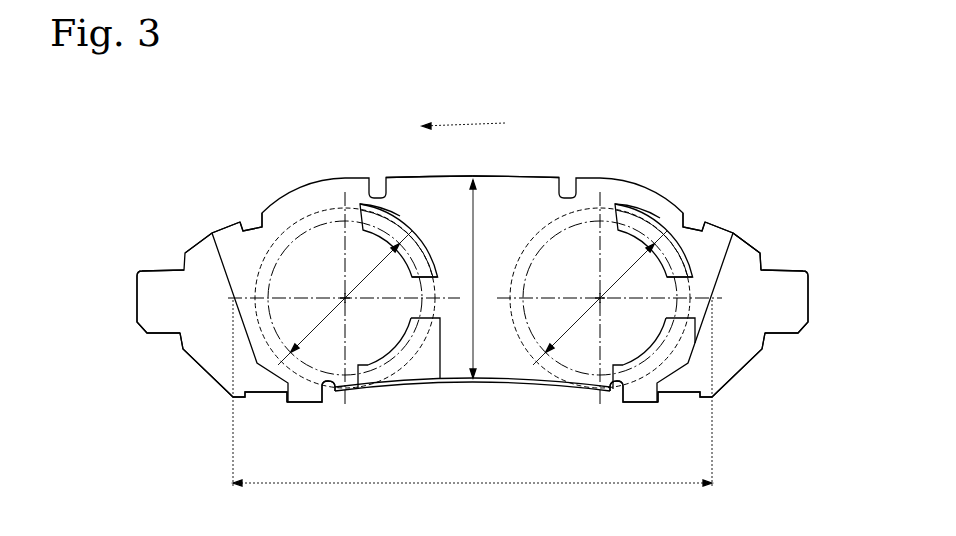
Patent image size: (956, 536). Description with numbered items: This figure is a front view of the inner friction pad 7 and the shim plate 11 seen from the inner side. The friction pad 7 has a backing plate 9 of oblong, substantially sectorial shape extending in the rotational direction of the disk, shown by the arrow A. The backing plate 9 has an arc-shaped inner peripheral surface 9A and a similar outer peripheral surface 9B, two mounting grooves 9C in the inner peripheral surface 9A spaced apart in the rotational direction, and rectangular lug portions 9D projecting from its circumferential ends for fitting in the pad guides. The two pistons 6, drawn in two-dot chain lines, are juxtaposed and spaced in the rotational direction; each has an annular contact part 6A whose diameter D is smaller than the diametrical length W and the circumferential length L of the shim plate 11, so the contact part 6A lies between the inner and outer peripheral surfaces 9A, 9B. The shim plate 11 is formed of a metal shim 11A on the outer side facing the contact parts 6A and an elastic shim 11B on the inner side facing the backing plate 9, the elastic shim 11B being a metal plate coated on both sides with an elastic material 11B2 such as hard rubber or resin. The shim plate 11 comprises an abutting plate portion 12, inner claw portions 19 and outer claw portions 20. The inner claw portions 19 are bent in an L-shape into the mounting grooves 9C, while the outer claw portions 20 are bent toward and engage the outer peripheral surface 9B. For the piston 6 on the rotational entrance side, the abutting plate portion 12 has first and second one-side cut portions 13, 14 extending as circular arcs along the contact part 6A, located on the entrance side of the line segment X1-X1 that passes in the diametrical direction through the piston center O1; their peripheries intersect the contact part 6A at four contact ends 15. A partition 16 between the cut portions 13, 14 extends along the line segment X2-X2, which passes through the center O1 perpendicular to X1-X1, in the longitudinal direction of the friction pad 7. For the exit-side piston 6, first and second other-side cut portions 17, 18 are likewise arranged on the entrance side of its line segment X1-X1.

The piston 6 is at (293, 230).
The annular contact part 6A is at (323, 217).
The inner friction pad 7 is at (753, 246).
The backing plate 9 is at (210, 357).
The inner peripheral surface 9A is at (489, 391).
The outer peripheral surface 9B is at (250, 226).
The mounting groove 9C is at (262, 394).
The lug portion 9D is at (152, 280).
The shim plate 11 is at (535, 176).
The metal shim 11A is at (545, 384).
The elastic shim 11B is at (697, 358).
The elastic material 11B2 is at (415, 330).
The abutting plate portion 12 is at (503, 197).
The first one-side cut portion 13 is at (672, 285).
The second one-side cut portion 14 is at (640, 365).
The contact end 15 is at (364, 206).
The partition 16 is at (440, 287).
The first other-side cut portion 17 is at (390, 245).
The second other-side cut portion 18 is at (380, 362).
The inner claw portion 19 is at (303, 402).
The outer claw portion 20 is at (222, 228).
The rotational direction of the disk A is at (463, 115).
The diameter of the annular contact part D is at (472, 298).
The circumferential length of the shim plate L is at (472, 393).
The diametrical length of the shim plate W is at (485, 279).
The diametrical center of the piston O1 is at (341, 292).
The line segment X1- X1 is at (472, 302).
The line segment X2- X2 is at (470, 301).